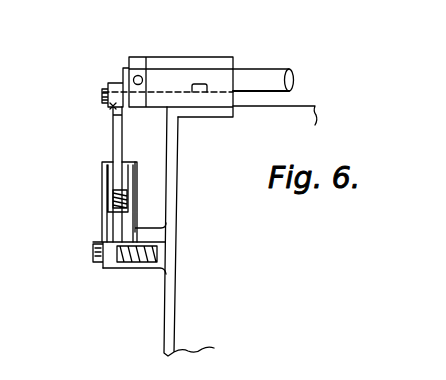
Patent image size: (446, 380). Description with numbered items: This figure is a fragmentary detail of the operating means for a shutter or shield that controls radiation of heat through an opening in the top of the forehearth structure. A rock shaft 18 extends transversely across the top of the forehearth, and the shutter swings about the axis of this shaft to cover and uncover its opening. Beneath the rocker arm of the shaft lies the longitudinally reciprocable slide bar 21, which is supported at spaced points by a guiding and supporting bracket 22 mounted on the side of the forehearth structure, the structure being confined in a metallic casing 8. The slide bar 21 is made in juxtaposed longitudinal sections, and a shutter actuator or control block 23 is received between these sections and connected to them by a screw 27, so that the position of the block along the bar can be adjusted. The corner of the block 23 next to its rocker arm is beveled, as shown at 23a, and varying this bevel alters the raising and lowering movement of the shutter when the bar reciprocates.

The metallic casing 8 is at (170, 310).
The rock shaft 18 is at (270, 77).
The slide bar 21 is at (105, 175).
The guiding and supporting bracket 22 is at (112, 222).
The shutter actuator block 23 is at (113, 138).
The beveled corner portion 23a is at (114, 113).
The screw 27 is at (103, 203).